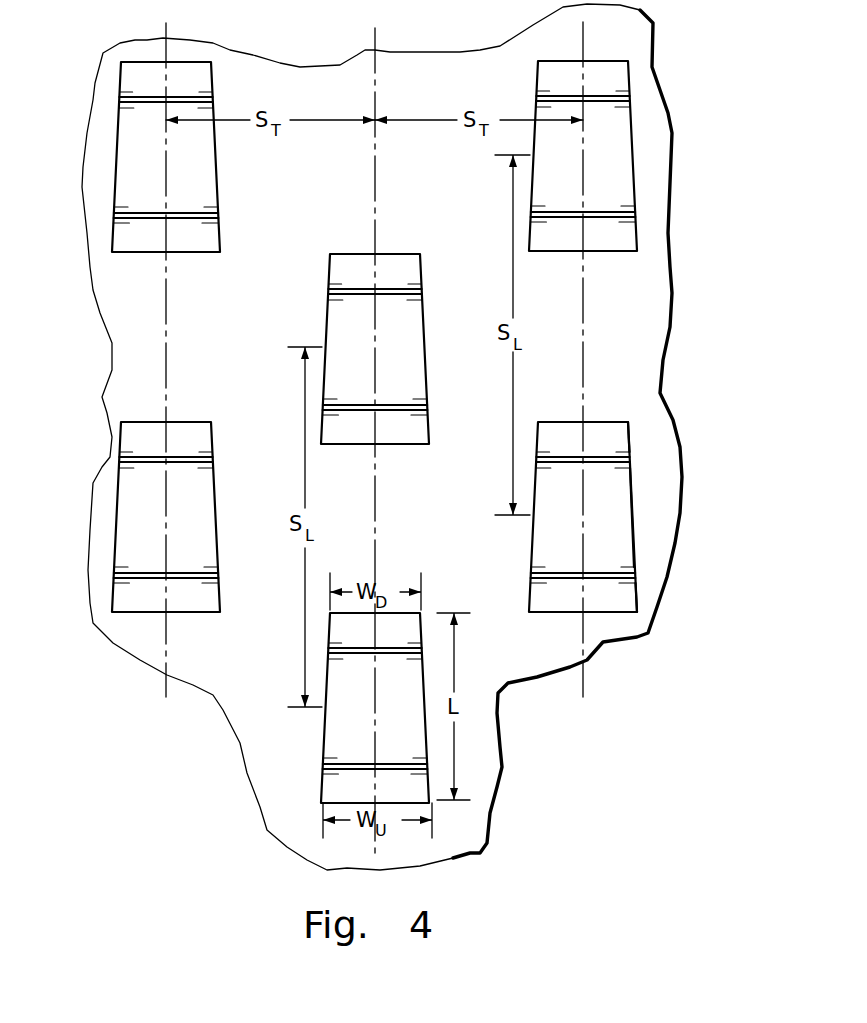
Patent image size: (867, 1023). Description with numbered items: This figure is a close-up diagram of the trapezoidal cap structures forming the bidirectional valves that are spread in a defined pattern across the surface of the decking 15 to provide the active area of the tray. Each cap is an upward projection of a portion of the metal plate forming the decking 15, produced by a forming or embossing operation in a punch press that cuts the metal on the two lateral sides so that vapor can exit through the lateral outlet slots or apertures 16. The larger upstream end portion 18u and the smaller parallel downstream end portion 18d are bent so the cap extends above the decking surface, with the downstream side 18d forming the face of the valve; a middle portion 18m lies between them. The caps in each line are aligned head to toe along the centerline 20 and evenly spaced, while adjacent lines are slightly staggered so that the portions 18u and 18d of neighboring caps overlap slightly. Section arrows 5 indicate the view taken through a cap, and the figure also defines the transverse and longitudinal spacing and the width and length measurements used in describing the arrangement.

The decking 15 is at (136, 364).
The vapor outlet slots or apertures 16 is at (644, 523).
The downstream end portion 18d is at (639, 445).
The middle portion of tube 18m is at (689, 517).
The upstream end portion 18u is at (630, 595).
The centerline 20 is at (580, 640).
The section line 5 is at (390, 468).